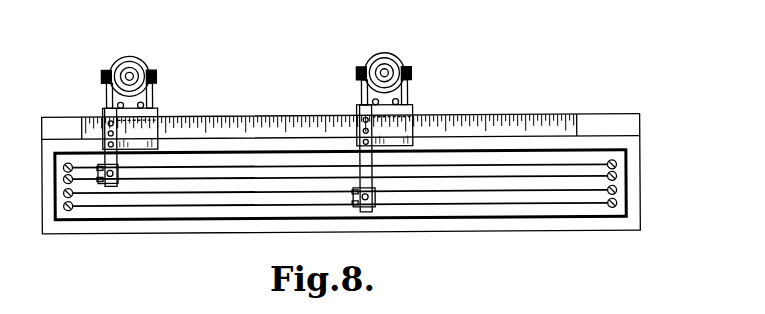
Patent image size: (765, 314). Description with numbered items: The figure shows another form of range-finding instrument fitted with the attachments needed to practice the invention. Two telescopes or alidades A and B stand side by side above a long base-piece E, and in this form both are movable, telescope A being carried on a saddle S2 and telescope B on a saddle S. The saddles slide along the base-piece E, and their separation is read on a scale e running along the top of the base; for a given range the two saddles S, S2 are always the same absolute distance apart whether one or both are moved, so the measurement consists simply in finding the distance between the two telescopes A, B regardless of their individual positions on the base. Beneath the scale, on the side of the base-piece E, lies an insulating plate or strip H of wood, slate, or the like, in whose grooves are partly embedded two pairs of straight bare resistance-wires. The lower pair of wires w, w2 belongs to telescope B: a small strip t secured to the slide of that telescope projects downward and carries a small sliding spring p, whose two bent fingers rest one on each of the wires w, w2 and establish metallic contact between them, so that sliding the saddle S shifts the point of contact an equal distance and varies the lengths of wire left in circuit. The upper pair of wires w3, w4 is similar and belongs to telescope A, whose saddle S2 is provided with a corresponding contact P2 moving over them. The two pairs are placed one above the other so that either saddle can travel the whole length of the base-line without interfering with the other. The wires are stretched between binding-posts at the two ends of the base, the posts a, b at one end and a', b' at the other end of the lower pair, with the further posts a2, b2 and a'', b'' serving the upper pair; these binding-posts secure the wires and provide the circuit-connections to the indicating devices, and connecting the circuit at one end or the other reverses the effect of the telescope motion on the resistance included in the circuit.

The telescope A is at (128, 68).
The telescope B is at (383, 67).
The strip t is at (106, 119).
The scale e is at (307, 120).
The saddle S2 is at (130, 128).
The saddle S is at (385, 125).
The contact P2 is at (115, 181).
The sliding spring p is at (357, 208).
The resistance-wire w is at (340, 185).
The resistance-wire w2 is at (340, 208).
The resistance-wire w3 is at (340, 160).
The resistance-wire w4 is at (340, 180).
The binding-post a is at (46, 193).
The binding-post b is at (46, 209).
The binding post a2 is at (62, 166).
The binding post b2 is at (62, 178).
The binding-post a' is at (636, 189).
The binding-post b' is at (637, 207).
The binding post a'' is at (635, 156).
The binding post b'' is at (636, 172).
The base-piece E is at (258, 219).
The plate or strip H is at (308, 210).